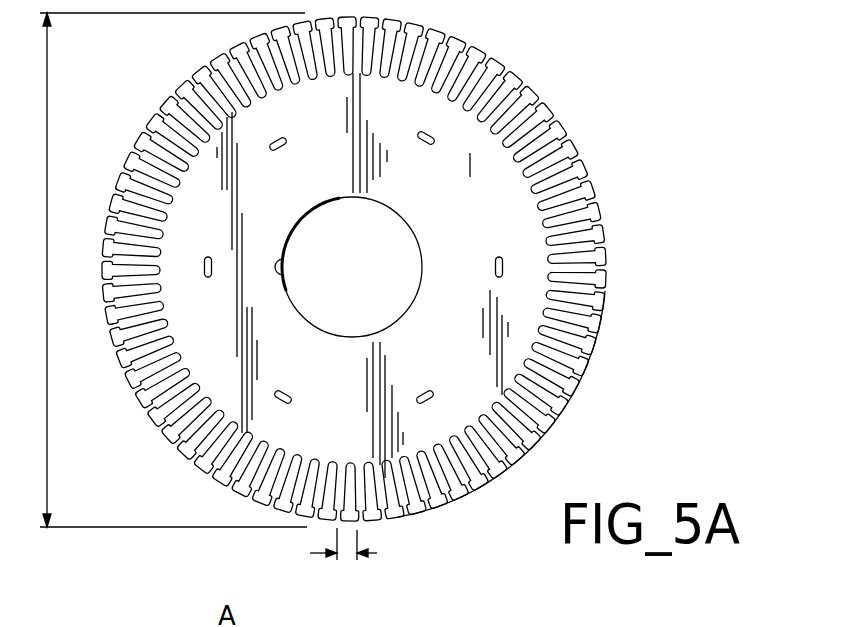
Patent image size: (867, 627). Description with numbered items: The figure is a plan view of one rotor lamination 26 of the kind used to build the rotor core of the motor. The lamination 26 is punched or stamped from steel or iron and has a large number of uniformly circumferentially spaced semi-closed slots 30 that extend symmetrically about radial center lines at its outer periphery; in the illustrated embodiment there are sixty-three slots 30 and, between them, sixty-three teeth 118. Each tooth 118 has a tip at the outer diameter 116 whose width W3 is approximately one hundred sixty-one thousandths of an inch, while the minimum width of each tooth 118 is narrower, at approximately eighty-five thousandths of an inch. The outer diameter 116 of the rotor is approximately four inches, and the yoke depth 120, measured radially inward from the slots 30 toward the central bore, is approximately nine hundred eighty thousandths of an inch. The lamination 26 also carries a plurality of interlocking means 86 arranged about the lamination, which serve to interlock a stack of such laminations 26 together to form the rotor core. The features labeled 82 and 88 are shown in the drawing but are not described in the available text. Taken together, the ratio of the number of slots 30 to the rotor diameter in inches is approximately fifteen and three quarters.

The rotor lamination 26 is at (569, 89).
The semi-closed slots 30 is at (463, 72).
The outer periphery 82 is at (606, 294).
The interlocking means 86 is at (495, 266).
The lamination web 88 is at (410, 425).
The outer diameter 116 is at (163, 270).
The teeth 118 is at (212, 474).
The yoke depth 120 is at (527, 182).
The tooth tip width W3 is at (366, 553).